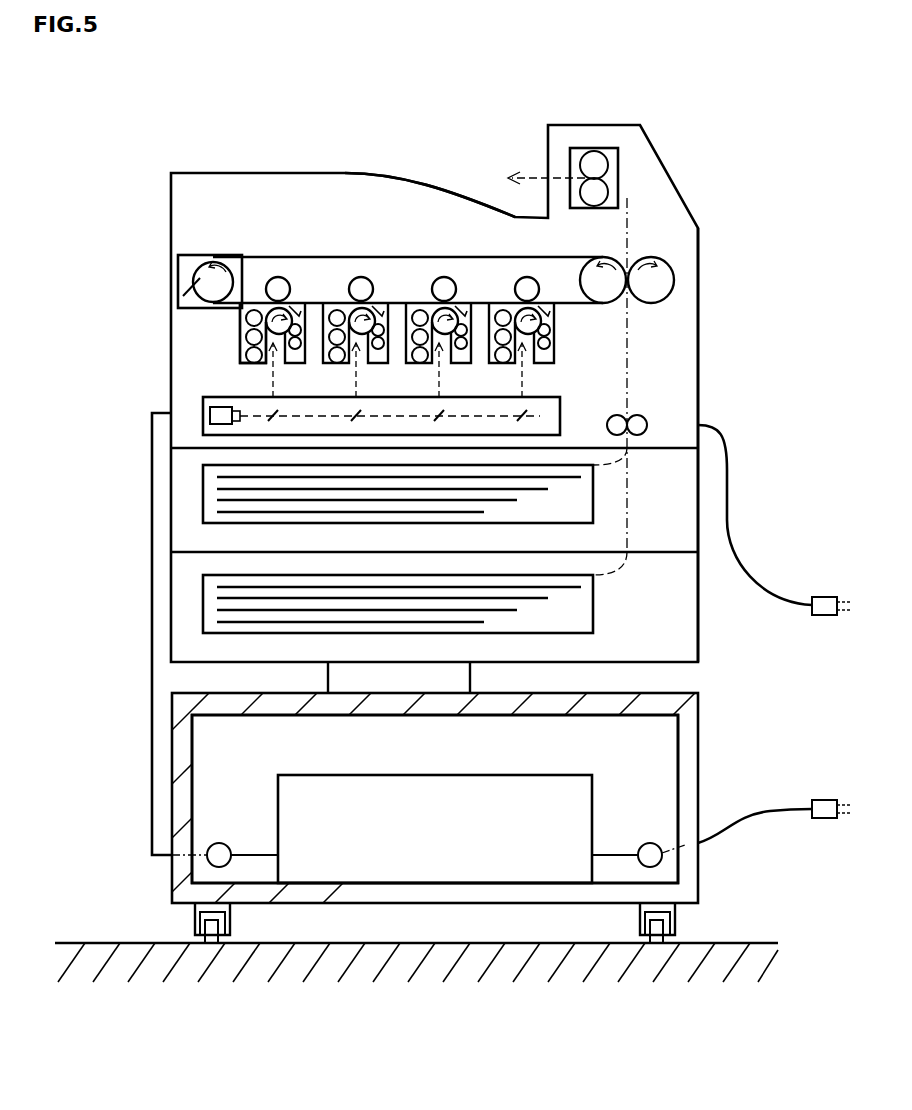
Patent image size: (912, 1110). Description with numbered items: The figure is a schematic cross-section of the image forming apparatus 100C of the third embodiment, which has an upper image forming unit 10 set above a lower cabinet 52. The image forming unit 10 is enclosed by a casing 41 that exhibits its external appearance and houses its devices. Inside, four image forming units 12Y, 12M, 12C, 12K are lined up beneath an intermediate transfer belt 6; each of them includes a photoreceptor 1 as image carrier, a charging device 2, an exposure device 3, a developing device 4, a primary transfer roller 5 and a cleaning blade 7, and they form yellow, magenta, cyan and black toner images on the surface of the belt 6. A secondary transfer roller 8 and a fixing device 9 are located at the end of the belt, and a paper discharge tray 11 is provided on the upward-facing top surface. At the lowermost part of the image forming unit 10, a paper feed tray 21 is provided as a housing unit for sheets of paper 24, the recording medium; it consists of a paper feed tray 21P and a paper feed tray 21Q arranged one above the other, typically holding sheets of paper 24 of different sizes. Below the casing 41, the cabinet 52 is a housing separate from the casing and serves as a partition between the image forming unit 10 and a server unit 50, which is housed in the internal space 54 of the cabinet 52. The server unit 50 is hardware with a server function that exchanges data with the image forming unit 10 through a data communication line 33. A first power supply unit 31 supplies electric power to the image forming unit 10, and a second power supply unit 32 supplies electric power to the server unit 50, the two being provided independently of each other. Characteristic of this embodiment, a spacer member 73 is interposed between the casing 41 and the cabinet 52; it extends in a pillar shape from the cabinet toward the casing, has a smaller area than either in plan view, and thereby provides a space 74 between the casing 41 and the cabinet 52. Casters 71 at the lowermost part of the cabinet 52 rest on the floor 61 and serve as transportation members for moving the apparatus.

The image forming apparatus 100C is at (133, 112).
The image forming unit 10 is at (160, 235).
The paper discharge tray 11 is at (388, 182).
The fixing device 9 is at (600, 208).
The intermediate transfer belt 6 is at (347, 257).
The secondary transfer roller 8 is at (674, 290).
The casing 41 is at (698, 336).
The image forming unit 12Y is at (279, 358).
The image forming unit 12M is at (362, 358).
The image forming unit 12C is at (445, 358).
The image forming unit 12K is at (528, 358).
The photoreceptor 1 is at (276, 307).
The charging device 2 is at (300, 318).
The primary transfer roller 5 is at (278, 276).
The cleaning blade 7 is at (299, 326).
The developing device 4 is at (243, 318).
The exposure device 3 is at (203, 414).
The paper feed tray 21 is at (319, 549).
The paper feed tray 21P is at (185, 508).
The paper feed tray 21Q is at (185, 618).
The sheet of paper 24 is at (228, 477).
The first power supply unit 31 is at (727, 497).
The second power supply unit 32 is at (770, 812).
The spacer member 73 is at (350, 676).
The space 74 is at (622, 677).
The data communication line 33 is at (172, 729).
The cabinet 52 is at (172, 797).
The internal space 54 is at (655, 745).
The server unit 50 is at (568, 810).
The caster 71 is at (195, 922).
The floor 61 is at (70, 942).